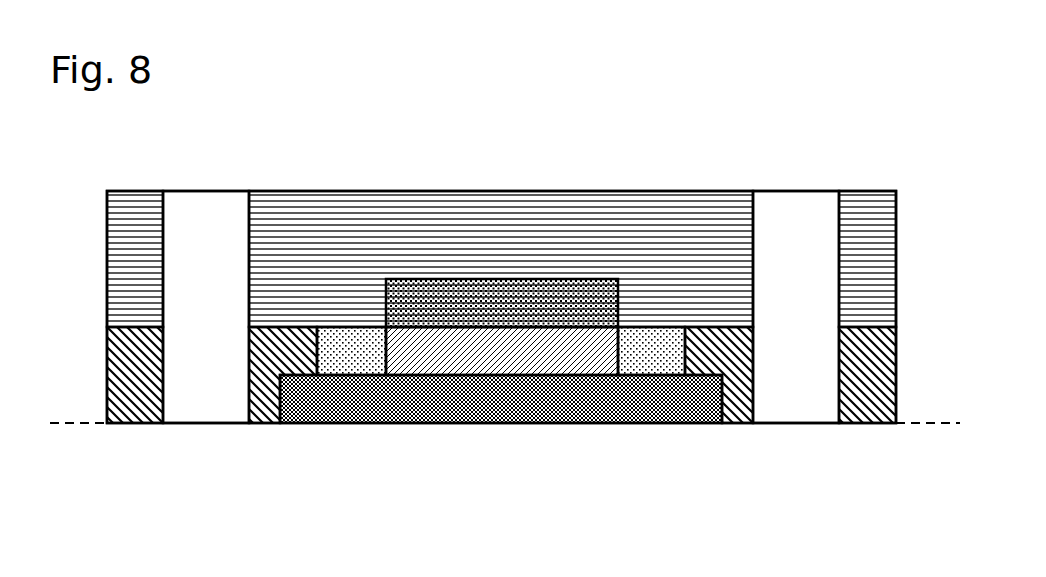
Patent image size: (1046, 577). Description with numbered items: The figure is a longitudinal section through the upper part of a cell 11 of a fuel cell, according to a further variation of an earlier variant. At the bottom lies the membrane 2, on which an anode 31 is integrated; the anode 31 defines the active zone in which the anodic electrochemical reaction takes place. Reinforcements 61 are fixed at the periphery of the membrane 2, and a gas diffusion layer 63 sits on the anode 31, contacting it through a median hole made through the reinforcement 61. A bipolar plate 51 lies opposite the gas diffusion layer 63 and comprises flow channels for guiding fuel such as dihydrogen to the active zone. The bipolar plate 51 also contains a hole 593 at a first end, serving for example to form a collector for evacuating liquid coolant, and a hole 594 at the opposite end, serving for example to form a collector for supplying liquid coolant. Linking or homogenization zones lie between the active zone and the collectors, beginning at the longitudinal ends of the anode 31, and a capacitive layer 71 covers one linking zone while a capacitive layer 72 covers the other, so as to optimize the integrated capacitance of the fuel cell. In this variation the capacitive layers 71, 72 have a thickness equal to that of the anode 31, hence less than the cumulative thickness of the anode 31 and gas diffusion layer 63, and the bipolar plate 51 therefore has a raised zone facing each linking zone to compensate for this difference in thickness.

The cell 11 is at (105, 162).
The membrane 2 is at (447, 430).
The anode 31 is at (559, 348).
The bipolar plate 51 is at (497, 250).
The reinforcement 61 is at (145, 423).
The gas diffusion layer 63 is at (445, 293).
The capacitive layer 71 is at (356, 360).
The capacitive layer 72 is at (665, 358).
The hole 593 is at (183, 321).
The hole 594 is at (773, 321).